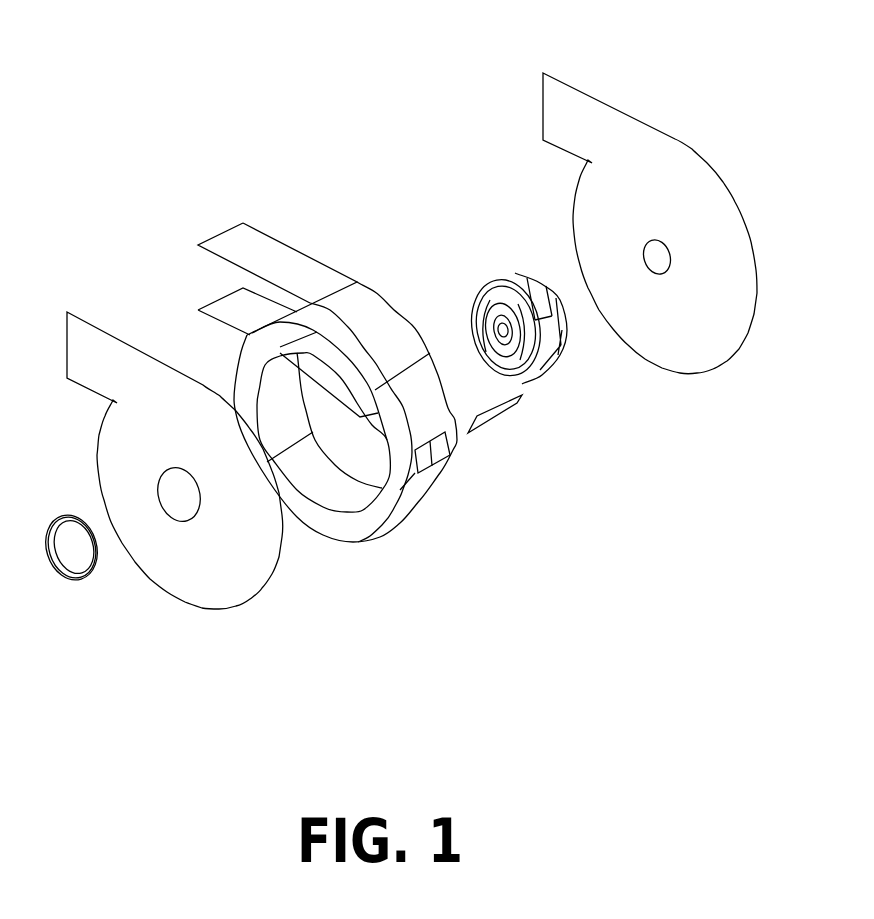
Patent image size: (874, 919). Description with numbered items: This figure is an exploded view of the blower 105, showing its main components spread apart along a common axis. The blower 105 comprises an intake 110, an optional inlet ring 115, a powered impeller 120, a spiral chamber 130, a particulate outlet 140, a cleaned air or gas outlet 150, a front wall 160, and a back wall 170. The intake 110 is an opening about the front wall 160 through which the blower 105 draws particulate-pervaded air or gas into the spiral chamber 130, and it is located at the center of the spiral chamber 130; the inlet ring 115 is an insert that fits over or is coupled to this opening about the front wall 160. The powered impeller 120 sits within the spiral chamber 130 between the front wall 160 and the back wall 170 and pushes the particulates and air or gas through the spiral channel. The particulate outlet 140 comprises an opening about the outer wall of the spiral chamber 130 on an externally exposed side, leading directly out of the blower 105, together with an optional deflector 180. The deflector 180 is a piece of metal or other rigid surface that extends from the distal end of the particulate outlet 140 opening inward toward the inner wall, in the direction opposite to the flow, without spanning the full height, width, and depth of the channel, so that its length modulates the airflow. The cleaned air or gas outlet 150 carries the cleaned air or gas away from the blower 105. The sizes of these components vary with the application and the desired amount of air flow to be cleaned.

The blower 105 is at (232, 81).
The intake 110 is at (183, 493).
The inlet ring 115 is at (98, 567).
The powered impeller 120 is at (532, 353).
The spiral chamber 130 is at (362, 523).
The particulate outlet 140 is at (450, 457).
The cleaned air or gas outlet 150 is at (237, 280).
The front wall 160 is at (253, 598).
The back wall 170 is at (580, 185).
The deflector 180 is at (498, 421).